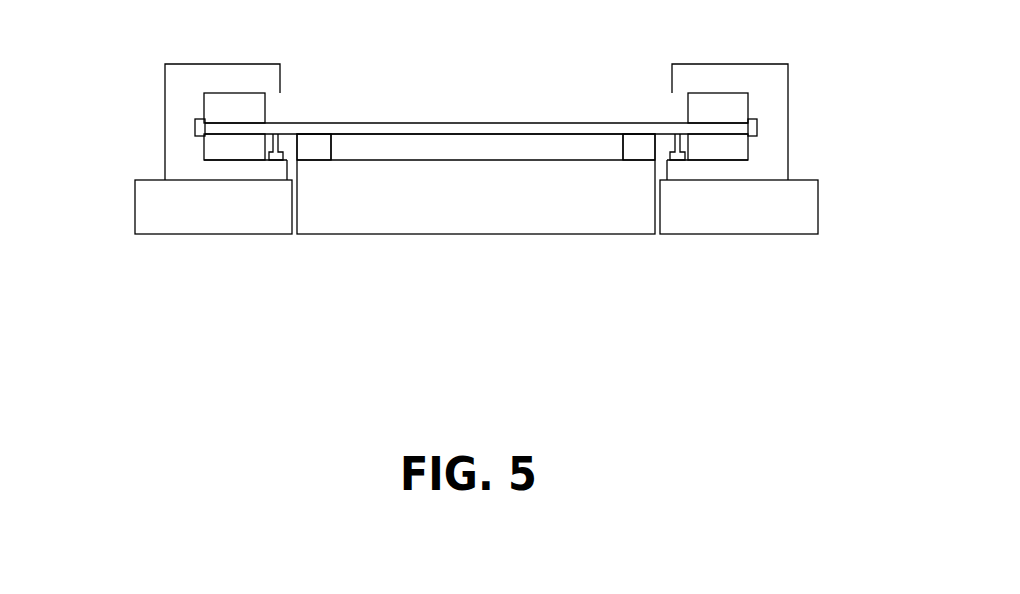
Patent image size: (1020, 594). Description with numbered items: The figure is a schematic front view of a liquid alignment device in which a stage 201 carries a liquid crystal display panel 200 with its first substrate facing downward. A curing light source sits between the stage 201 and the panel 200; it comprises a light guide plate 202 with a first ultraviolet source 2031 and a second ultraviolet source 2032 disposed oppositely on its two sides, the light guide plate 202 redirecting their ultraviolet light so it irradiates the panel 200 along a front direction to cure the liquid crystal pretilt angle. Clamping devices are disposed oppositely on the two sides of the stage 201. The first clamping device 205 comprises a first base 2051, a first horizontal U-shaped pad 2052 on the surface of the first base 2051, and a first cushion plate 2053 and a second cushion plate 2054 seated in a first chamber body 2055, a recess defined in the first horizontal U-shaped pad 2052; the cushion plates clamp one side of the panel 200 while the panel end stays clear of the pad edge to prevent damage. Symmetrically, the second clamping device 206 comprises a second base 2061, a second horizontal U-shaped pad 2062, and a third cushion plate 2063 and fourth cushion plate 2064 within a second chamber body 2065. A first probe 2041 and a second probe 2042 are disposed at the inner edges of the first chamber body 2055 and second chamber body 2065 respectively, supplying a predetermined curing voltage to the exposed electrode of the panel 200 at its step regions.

The liquid crystal display panel 200 is at (470, 128).
The stage 201 is at (470, 238).
The light guide plate 202 is at (393, 148).
The first ultraviolet source 2031 is at (318, 145).
The second ultraviolet source 2032 is at (632, 145).
The first probe 2041 is at (275, 140).
The second probe 2042 is at (673, 140).
The first clamping device 205 is at (187, 181).
The first base 2051 is at (140, 208).
The first horizontal U-shaped pad 2052 is at (178, 83).
The first cushion plate 2053 is at (210, 148).
The second cushion plate 2054 is at (242, 108).
The first chamber body 2055 is at (206, 115).
The second clamping device 206 is at (758, 175).
The second base 2061 is at (772, 222).
The second horizontal U-shaped pad 2062 is at (772, 90).
The third cushion plate 2063 is at (727, 152).
The fourth cushion plate 2064 is at (707, 107).
The second chamber body 2065 is at (750, 93).